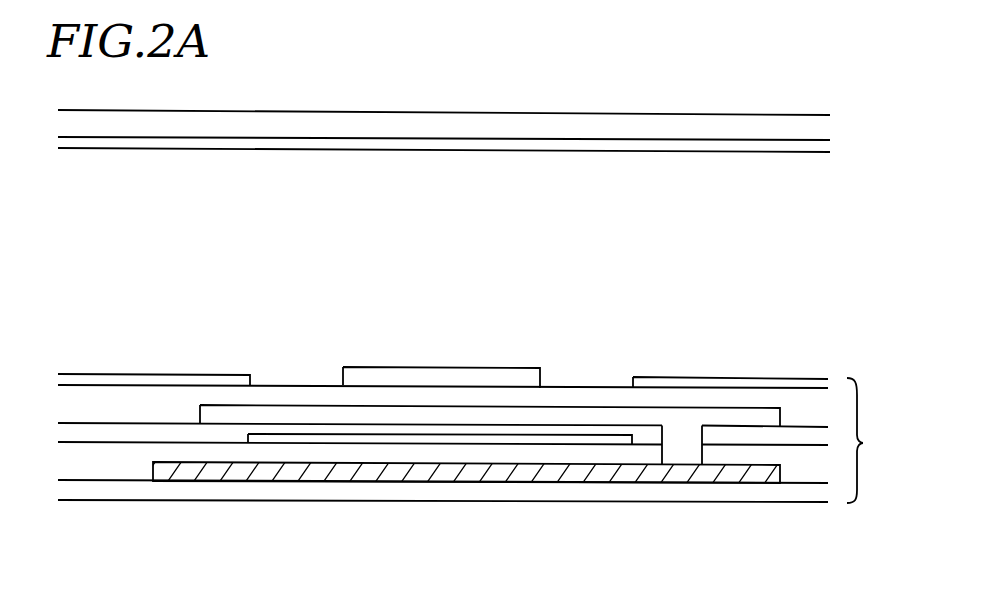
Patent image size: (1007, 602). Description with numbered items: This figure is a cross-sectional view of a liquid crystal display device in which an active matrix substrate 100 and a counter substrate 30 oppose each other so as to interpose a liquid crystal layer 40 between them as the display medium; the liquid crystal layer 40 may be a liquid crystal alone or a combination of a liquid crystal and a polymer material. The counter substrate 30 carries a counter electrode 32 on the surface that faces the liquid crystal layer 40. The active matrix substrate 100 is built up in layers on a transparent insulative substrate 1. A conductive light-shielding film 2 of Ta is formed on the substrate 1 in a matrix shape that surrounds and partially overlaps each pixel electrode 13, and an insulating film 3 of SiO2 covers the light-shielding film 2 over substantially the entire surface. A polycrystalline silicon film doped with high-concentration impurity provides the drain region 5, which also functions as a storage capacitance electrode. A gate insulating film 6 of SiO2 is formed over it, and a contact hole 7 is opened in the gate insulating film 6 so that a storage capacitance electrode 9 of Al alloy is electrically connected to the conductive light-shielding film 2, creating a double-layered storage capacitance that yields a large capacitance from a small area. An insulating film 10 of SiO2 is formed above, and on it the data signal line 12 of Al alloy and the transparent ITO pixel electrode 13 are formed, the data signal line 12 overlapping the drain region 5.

The transparent insulative substrate 1 is at (482, 495).
The conductive light-shielding film 2 is at (320, 475).
The insulating film 3 is at (583, 457).
The drain region 5 is at (612, 440).
The gate insulating film 6 is at (650, 435).
The contact hole 7 is at (682, 456).
The storage capacitance electrode 9 is at (225, 417).
The insulating film 10 is at (135, 412).
The data signal line 12 is at (405, 380).
The pixel electrode 13 is at (100, 380).
The counter substrate 30 is at (480, 126).
The counter electrode 32 is at (648, 148).
The liquid crystal layer 40 is at (762, 257).
The active matrix substrate 100 is at (877, 440).